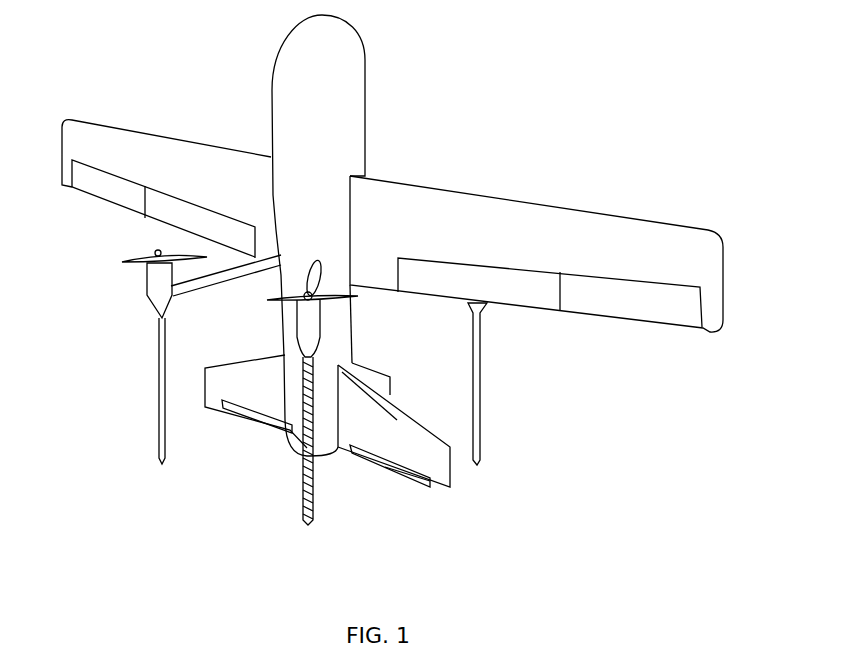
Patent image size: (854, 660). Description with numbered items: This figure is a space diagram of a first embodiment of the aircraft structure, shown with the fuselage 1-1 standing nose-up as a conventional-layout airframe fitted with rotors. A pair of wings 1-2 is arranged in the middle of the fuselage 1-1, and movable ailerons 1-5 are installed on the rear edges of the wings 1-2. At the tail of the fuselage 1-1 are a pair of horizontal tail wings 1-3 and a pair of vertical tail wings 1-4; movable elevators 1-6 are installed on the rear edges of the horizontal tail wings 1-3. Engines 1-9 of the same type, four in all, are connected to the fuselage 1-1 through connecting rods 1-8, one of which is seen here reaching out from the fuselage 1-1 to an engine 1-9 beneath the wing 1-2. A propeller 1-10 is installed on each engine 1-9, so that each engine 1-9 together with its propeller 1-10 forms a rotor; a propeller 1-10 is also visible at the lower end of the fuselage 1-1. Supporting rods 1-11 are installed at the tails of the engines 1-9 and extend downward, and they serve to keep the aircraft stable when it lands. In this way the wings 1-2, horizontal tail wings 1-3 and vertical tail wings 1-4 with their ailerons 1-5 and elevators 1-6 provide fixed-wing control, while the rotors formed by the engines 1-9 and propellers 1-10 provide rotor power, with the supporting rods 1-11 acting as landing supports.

The fuselage 1-1 is at (358, 45).
The wing 1-2 is at (477, 200).
The horizontal tail wing 1-3 is at (400, 418).
The vertical tail wing 1-4 is at (377, 370).
The aileron 1-5 is at (650, 318).
The elevator 1-6 is at (395, 487).
The connecting rod 1-8 is at (187, 292).
The engine 1-9 is at (150, 293).
The propeller 1-10 is at (150, 252).
The supporting rod 1-11 is at (157, 400).